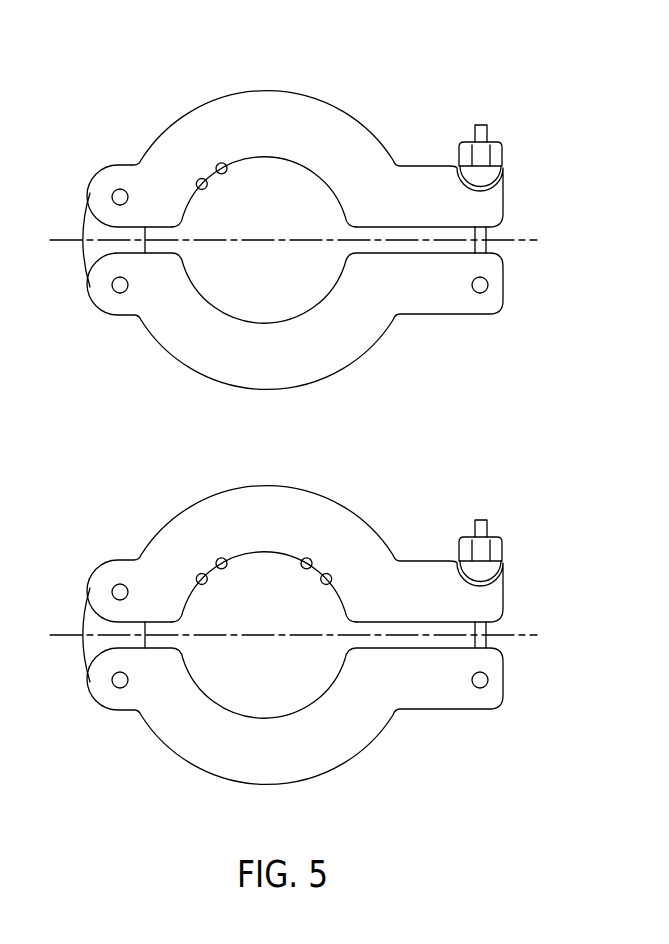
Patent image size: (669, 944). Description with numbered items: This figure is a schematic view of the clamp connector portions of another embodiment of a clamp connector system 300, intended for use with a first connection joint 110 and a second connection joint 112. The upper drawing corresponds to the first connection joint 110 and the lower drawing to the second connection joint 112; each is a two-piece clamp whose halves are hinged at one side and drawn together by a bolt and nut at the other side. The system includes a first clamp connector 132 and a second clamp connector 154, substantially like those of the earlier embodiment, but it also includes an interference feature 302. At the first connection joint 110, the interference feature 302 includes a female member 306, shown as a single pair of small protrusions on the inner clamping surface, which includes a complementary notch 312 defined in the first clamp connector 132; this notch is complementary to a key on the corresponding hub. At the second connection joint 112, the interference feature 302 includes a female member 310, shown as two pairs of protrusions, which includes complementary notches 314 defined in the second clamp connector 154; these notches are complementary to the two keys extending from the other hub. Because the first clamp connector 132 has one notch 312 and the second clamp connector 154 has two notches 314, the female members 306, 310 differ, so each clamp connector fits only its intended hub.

The first connection joint 110 is at (565, 135).
The second connection joint 112 is at (565, 530).
The clamp connector system 300 is at (503, 85).
The interference feature 302 is at (293, 189).
The first clamp connector 132 is at (503, 286).
The second clamp connector 154 is at (503, 587).
The female member 306 is at (218, 160).
The notch 312 is at (224, 178).
The female member 310 is at (218, 557).
The notches 314 is at (225, 572).